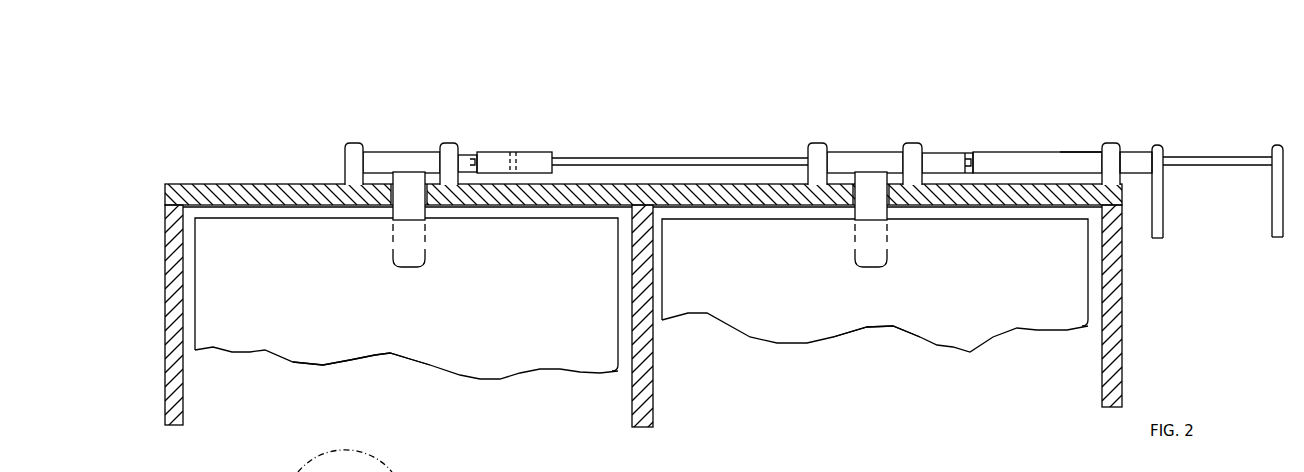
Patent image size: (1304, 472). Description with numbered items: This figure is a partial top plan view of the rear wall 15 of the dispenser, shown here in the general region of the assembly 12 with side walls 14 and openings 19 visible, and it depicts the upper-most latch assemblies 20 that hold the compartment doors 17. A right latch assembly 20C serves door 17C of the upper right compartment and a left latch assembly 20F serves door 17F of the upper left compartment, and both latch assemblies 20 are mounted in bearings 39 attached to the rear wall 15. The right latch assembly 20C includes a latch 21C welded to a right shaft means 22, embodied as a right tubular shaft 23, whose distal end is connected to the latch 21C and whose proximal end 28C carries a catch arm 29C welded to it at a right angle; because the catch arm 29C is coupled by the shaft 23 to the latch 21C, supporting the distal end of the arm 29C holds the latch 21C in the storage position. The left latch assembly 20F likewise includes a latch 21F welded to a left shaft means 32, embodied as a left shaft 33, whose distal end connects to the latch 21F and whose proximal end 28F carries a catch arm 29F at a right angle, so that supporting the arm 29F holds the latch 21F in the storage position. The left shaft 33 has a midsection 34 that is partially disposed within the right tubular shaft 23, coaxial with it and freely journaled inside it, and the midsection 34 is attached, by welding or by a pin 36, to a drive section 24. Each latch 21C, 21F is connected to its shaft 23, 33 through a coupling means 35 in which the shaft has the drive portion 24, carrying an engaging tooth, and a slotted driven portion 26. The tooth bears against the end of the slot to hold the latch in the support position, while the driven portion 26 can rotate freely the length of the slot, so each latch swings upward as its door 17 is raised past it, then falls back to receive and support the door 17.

The fluid dispensing apparatus 12 is at (151, 164).
The container side wall 14 is at (168, 267).
The rear wall 15 is at (232, 183).
The door 17 is at (302, 313).
The door of upper left compartment 17F is at (381, 322).
The door of upper right compartment 17C is at (876, 310).
The opening in top plate 19 is at (382, 198).
The latch assembly 20 is at (680, 142).
The left latch assembly 20F is at (645, 132).
The right latch assembly 20C is at (1033, 103).
The left latch 21F is at (398, 171).
The right latch 21C is at (861, 171).
The right shaft means 22 is at (1005, 115).
The right tubular shaft 23 is at (1072, 158).
The drive portion 24 is at (541, 152).
The driven portion 26 is at (418, 158).
The proximal end of right tubular shaft 28C is at (1148, 150).
The proximal end of left shaft 28F is at (1257, 147).
The right catch arm 29C is at (1165, 236).
The left catch arm 29F is at (1273, 240).
The left shaft means 32 is at (592, 118).
The left shaft 33 is at (622, 138).
The midsection 34 is at (749, 157).
The latch coupling 35 is at (470, 159).
The pin 36 is at (515, 152).
The bearings 39 is at (355, 145).